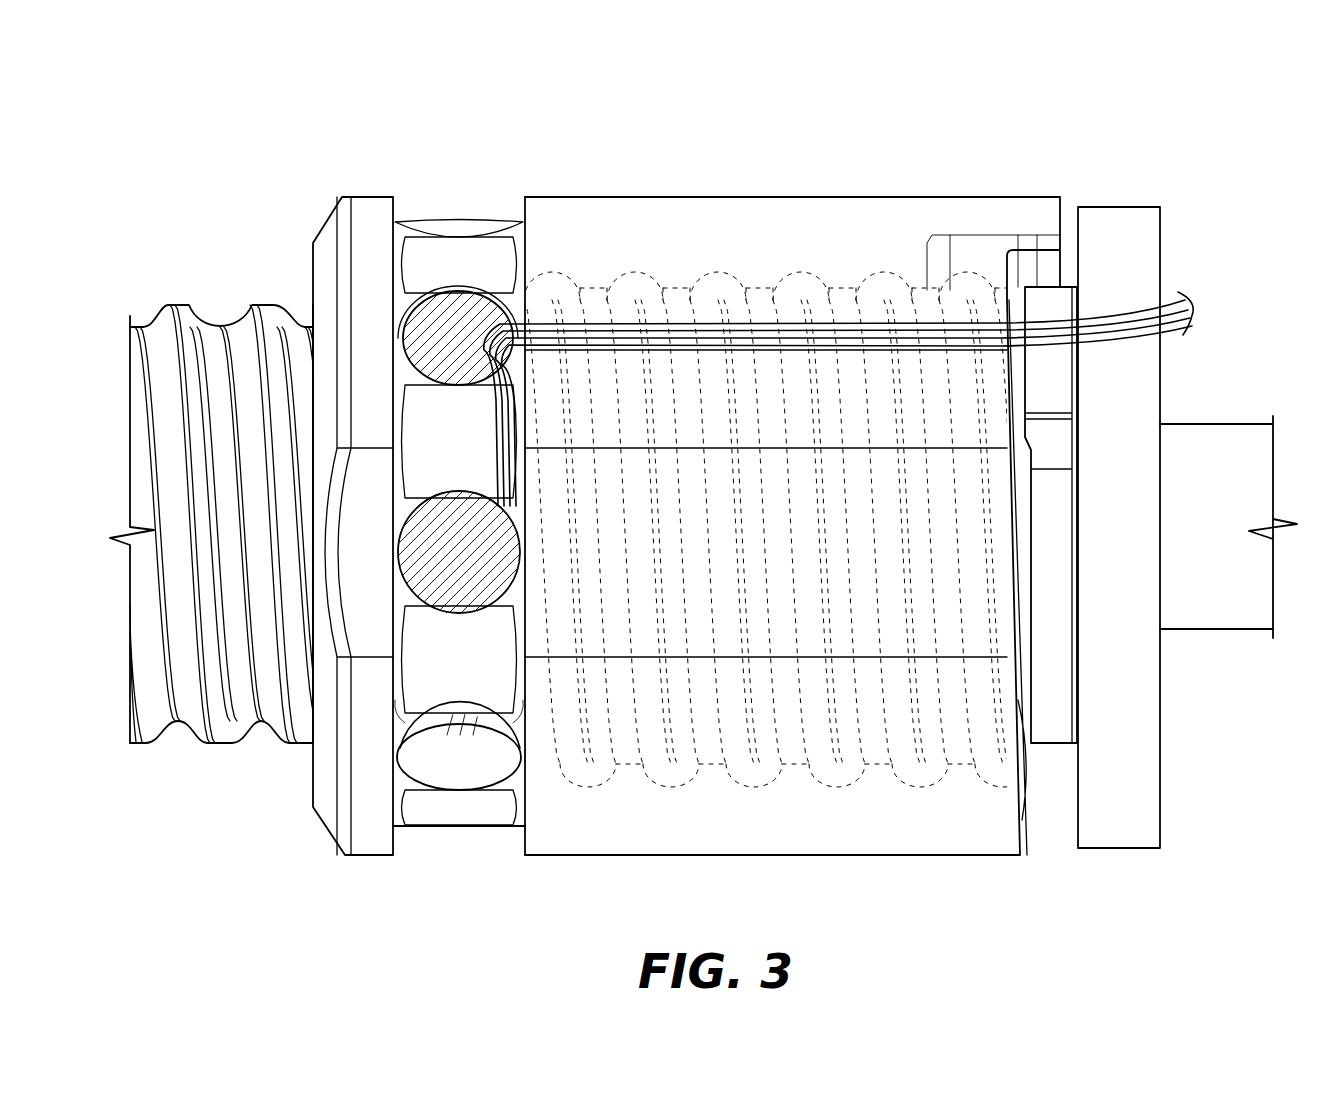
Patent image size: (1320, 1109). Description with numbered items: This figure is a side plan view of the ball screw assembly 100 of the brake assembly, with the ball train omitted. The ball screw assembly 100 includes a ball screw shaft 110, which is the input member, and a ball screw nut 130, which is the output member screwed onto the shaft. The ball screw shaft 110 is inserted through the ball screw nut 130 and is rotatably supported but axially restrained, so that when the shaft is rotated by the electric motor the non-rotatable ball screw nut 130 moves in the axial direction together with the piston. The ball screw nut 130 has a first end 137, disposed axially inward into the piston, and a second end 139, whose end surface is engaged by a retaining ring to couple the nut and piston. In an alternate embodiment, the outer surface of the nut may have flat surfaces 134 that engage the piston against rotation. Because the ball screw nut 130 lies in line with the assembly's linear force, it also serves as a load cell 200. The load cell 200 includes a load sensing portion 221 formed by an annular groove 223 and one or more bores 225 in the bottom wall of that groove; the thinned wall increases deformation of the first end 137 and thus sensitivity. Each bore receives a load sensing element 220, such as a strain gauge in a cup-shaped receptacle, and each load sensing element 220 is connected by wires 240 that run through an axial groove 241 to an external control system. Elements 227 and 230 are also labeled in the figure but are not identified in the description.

The ball screw assembly 100 is at (266, 143).
The ball screw shaft 110 is at (212, 343).
The ball screw nut 130 is at (816, 219).
The flat surfaces 134 is at (922, 615).
The first end 137 is at (322, 242).
The second end 139 is at (1028, 822).
The load cell 200 is at (462, 260).
The load sensing element 220 is at (412, 560).
The load sensing portion 221 is at (463, 848).
The groove 223 is at (522, 848).
The bores 225 is at (440, 767).
The spacer roller 227 is at (437, 265).
The helical raceway 230 is at (878, 758).
The wires 240 is at (883, 330).
The axial groove 241 is at (682, 347).